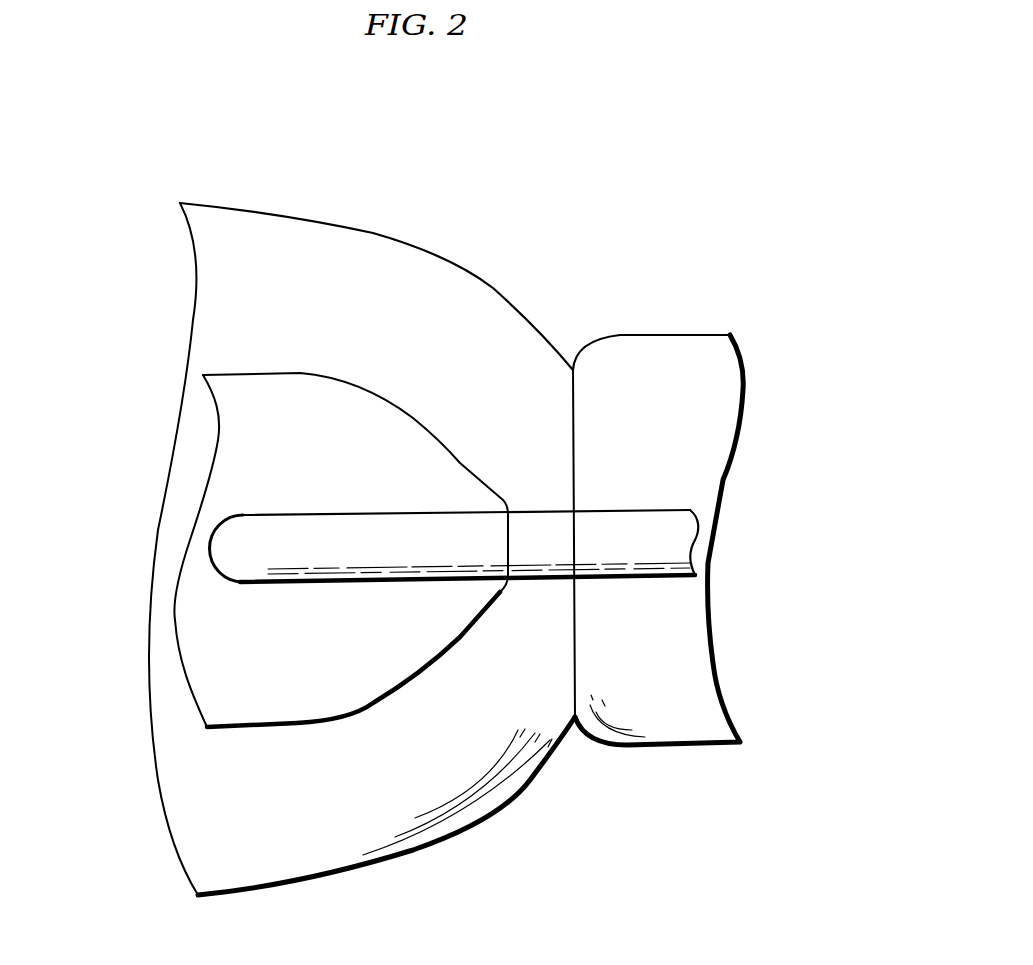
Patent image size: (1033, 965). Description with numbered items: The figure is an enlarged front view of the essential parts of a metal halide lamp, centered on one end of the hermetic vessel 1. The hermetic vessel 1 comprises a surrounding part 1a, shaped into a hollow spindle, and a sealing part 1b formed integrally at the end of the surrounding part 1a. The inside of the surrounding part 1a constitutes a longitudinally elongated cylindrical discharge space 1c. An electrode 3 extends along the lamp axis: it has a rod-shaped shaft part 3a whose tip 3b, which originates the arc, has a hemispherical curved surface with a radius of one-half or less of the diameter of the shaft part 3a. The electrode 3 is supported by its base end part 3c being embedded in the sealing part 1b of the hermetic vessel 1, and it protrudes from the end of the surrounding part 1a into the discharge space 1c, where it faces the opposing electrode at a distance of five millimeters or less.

The hermetic vessel 1 is at (320, 215).
The surrounding part 1a is at (493, 288).
The sealing part 1b is at (670, 335).
The discharge space 1c is at (330, 707).
The electrode 3 is at (300, 513).
The shaft part 3a is at (370, 572).
The tip 3b is at (212, 547).
The base end part 3c is at (660, 517).